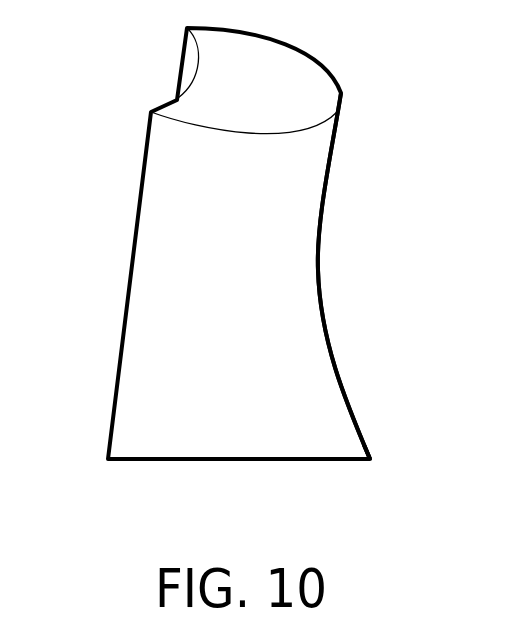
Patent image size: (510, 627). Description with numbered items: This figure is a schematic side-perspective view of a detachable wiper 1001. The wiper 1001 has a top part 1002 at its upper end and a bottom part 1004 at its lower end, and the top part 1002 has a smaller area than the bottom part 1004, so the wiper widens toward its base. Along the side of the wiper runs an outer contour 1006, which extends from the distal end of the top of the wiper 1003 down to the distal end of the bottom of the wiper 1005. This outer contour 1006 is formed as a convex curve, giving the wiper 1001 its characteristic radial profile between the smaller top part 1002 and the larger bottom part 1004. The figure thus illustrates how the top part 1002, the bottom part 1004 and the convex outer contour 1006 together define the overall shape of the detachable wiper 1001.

The wiper 1001 is at (146, 288).
The top part 1002 is at (323, 86).
The distal end of the top of the wiper 1003 is at (338, 115).
The outer contour 1006 is at (320, 257).
The bottom part 1004 is at (175, 459).
The distal end of the bottom of the wiper 1005 is at (372, 459).